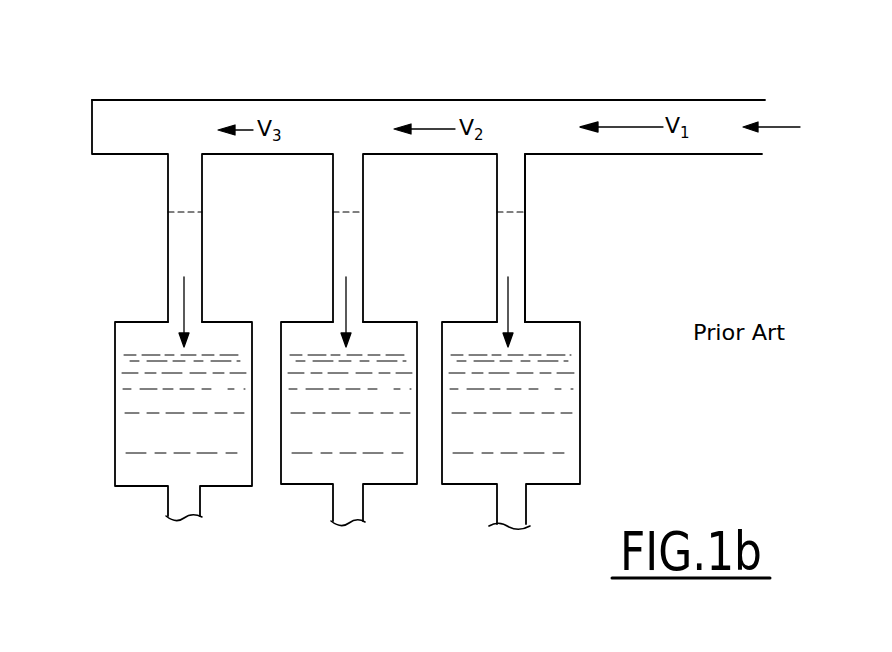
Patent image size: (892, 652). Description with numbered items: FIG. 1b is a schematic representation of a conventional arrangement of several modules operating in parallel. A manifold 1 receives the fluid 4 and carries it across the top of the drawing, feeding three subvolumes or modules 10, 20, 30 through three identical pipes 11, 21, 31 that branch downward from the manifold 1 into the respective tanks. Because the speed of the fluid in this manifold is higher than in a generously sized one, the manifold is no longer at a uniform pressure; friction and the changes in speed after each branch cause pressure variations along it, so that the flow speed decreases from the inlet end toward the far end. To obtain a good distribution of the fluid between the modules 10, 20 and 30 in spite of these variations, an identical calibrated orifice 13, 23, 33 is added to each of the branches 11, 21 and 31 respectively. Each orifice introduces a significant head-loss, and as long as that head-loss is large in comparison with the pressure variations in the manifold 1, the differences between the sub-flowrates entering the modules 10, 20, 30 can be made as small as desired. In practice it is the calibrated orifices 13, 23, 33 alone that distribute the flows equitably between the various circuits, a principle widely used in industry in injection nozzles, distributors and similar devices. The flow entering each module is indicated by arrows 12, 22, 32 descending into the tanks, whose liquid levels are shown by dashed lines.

The manifold 1 is at (462, 100).
The fluid 4 is at (780, 127).
The subvolume 10 is at (571, 425).
The pipe 11 is at (525, 172).
The first inlet flow 12 is at (508, 300).
The calibrated orifice 13 is at (525, 212).
The subvolume 20 is at (308, 472).
The pipe 21 is at (363, 172).
The second inlet flow 22 is at (346, 300).
The calibrated orifice 23 is at (363, 212).
The subvolume 30 is at (115, 409).
The pipe 31 is at (202, 189).
The third inlet flow 32 is at (184, 300).
The calibrated orifice 33 is at (202, 212).